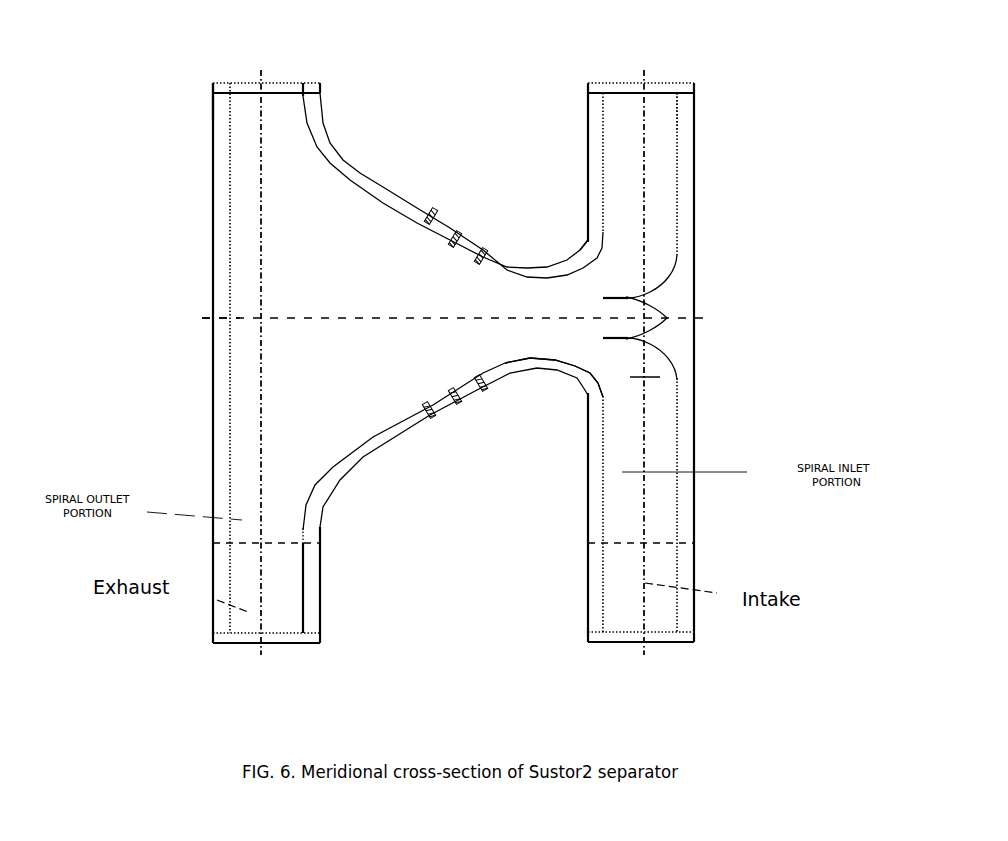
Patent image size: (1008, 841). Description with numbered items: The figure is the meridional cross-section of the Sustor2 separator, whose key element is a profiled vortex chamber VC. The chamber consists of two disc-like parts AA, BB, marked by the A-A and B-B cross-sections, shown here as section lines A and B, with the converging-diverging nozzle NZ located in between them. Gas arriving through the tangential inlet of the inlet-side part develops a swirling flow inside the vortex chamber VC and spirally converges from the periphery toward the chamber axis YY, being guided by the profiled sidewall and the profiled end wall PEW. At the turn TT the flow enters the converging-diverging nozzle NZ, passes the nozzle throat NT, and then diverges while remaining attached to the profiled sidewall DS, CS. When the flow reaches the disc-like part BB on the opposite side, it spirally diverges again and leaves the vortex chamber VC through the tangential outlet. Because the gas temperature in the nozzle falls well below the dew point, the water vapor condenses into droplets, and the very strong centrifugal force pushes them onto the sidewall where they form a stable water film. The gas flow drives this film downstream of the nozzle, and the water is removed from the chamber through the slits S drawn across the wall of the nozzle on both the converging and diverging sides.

The disc-like part BB is at (218, 88).
The B-B cross-section B is at (261, 371).
The vortex chamber VC is at (518, 68).
The A-A cross-section A is at (643, 363).
The disc-like part AA is at (667, 101).
The nozzle throat NT is at (546, 305).
The converging-diverging nozzle NZ is at (520, 293).
The slits S is at (482, 248).
The chamber axis YY is at (207, 318).
The turn TT is at (660, 377).
The profiled sidewall CS is at (577, 383).
The profiled sidewall DS is at (368, 450).
The profiled end wall PEW is at (688, 270).